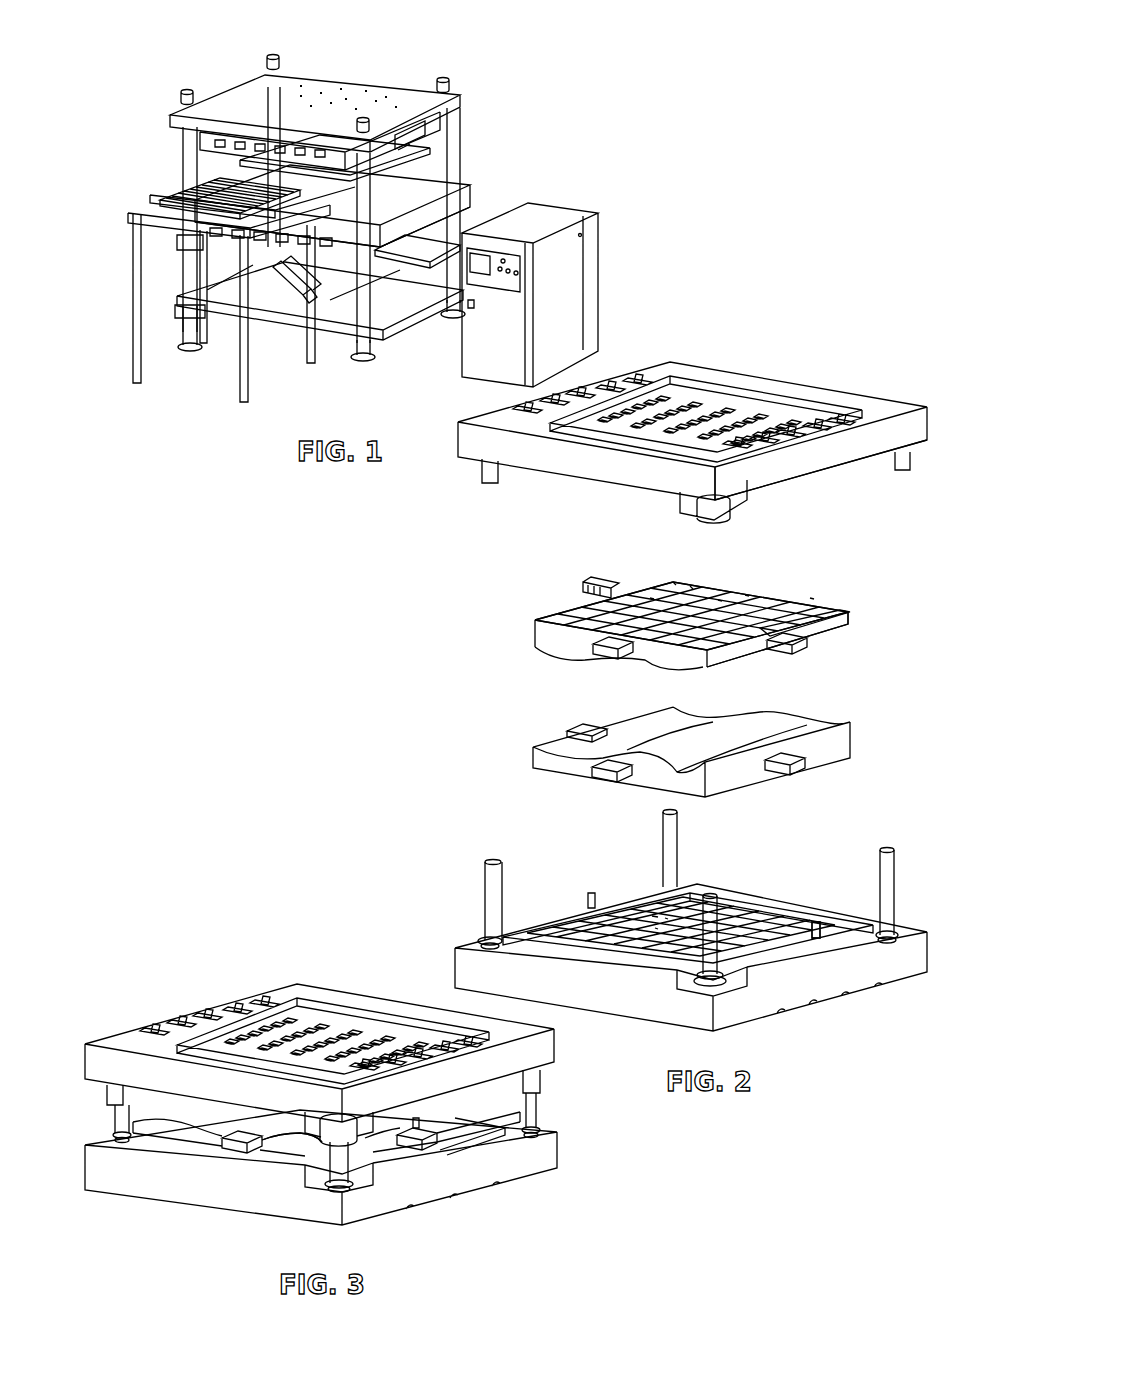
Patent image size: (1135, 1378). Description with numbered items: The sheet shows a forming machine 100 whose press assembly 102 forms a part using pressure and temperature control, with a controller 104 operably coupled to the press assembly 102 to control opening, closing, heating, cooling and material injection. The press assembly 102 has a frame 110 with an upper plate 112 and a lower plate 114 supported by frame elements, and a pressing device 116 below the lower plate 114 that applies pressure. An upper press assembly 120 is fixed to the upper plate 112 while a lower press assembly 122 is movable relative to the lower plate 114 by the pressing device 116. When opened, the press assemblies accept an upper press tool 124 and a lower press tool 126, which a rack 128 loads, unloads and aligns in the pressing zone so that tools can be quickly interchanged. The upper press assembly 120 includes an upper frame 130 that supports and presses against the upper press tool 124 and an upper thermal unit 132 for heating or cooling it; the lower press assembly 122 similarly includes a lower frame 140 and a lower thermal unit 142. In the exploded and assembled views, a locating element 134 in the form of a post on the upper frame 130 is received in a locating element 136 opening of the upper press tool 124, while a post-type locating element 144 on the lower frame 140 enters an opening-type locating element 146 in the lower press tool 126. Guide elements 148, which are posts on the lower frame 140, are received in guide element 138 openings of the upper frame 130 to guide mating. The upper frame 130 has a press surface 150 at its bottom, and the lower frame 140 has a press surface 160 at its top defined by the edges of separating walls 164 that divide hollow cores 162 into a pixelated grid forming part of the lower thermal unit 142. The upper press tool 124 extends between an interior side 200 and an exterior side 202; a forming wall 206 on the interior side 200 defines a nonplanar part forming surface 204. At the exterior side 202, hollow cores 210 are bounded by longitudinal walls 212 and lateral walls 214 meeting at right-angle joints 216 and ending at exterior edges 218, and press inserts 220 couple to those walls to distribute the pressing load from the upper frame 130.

In FIG. 1, the forming machine 100 is at (472, 78).
In FIG. 1, the press assembly 102 is at (247, 78).
In FIG. 1, the controller 104 is at (570, 215).
In FIG. 1, the frame 110 is at (337, 227).
In FIG. 1, the upper plate 112 is at (330, 78).
In FIG. 1, the lower plate 114 is at (385, 270).
In FIG. 1, the pressing device 116 is at (330, 300).
In FIG. 1, the upper press assembly 120 is at (210, 150).
In FIG. 2, the upper press assembly 120 is at (853, 342).
In FIG. 3, the upper press assembly 120 is at (205, 945).
In FIG. 1, the lower press assembly 122 is at (387, 187).
In FIG. 2, the lower press assembly 122 is at (787, 1017).
In FIG. 3, the lower press assembly 122 is at (488, 1245).
In FIG. 1, the upper press tool 124 is at (190, 190).
In FIG. 2, the upper press tool 124 is at (810, 605).
In FIG. 3, the upper press tool 124 is at (163, 1123).
In FIG. 1, the lower press tool 126 is at (170, 220).
In FIG. 2, the lower press tool 126 is at (838, 745).
In FIG. 3, the lower press tool 126 is at (197, 1133).
In FIG. 1, the rack 128 is at (133, 320).
In FIG. 1, the upper frame 130 is at (335, 163).
In FIG. 2, the upper frame 130 is at (835, 393).
In FIG. 3, the upper frame 130 is at (340, 998).
In FIG. 1, the upper thermal unit 132 is at (425, 135).
In FIG. 2, the locating element 134 is at (832, 487).
In FIG. 2, the locating element 136 is at (795, 635).
In FIG. 2, the guide element 138 is at (907, 465).
In FIG. 3, the guide element 138 is at (337, 1133).
In FIG. 1, the lower frame 140 is at (355, 212).
In FIG. 2, the lower frame 140 is at (860, 975).
In FIG. 3, the lower frame 140 is at (490, 1188).
In FIG. 1, the lower thermal unit 142 is at (405, 235).
In FIG. 2, the locating element 144 is at (822, 937).
In FIG. 3, the locating element 144 is at (418, 1125).
In FIG. 2, the locating element 146 is at (800, 772).
In FIG. 3, the locating element 146 is at (413, 1140).
In FIG. 2, the guide element 148 is at (882, 862).
In FIG. 3, the guide element 148 is at (338, 1160).
In FIG. 2, the press surface 150 is at (568, 494).
In FIG. 2, the press surface 160 is at (750, 915).
In FIG. 2, the hollow core 162 is at (657, 910).
In FIG. 2, the separating wall 164 is at (668, 920).
In FIG. 2, the interior side 200 is at (643, 663).
In FIG. 2, the exterior side 202 is at (625, 594).
In FIG. 2, the part forming surface 204 is at (700, 672).
In FIG. 3, the part forming surface 204 is at (180, 1132).
In FIG. 2, the forming wall 206 is at (578, 662).
In FIG. 2, the hollow core 210 is at (745, 595).
In FIG. 2, the longitudinal wall 212 is at (810, 598).
In FIG. 2, the lateral wall 214 is at (718, 600).
In FIG. 2, the joint 216 is at (690, 590).
In FIG. 2, the exterior edge 218 is at (650, 598).
In FIG. 2, the press insert 220 is at (590, 586).